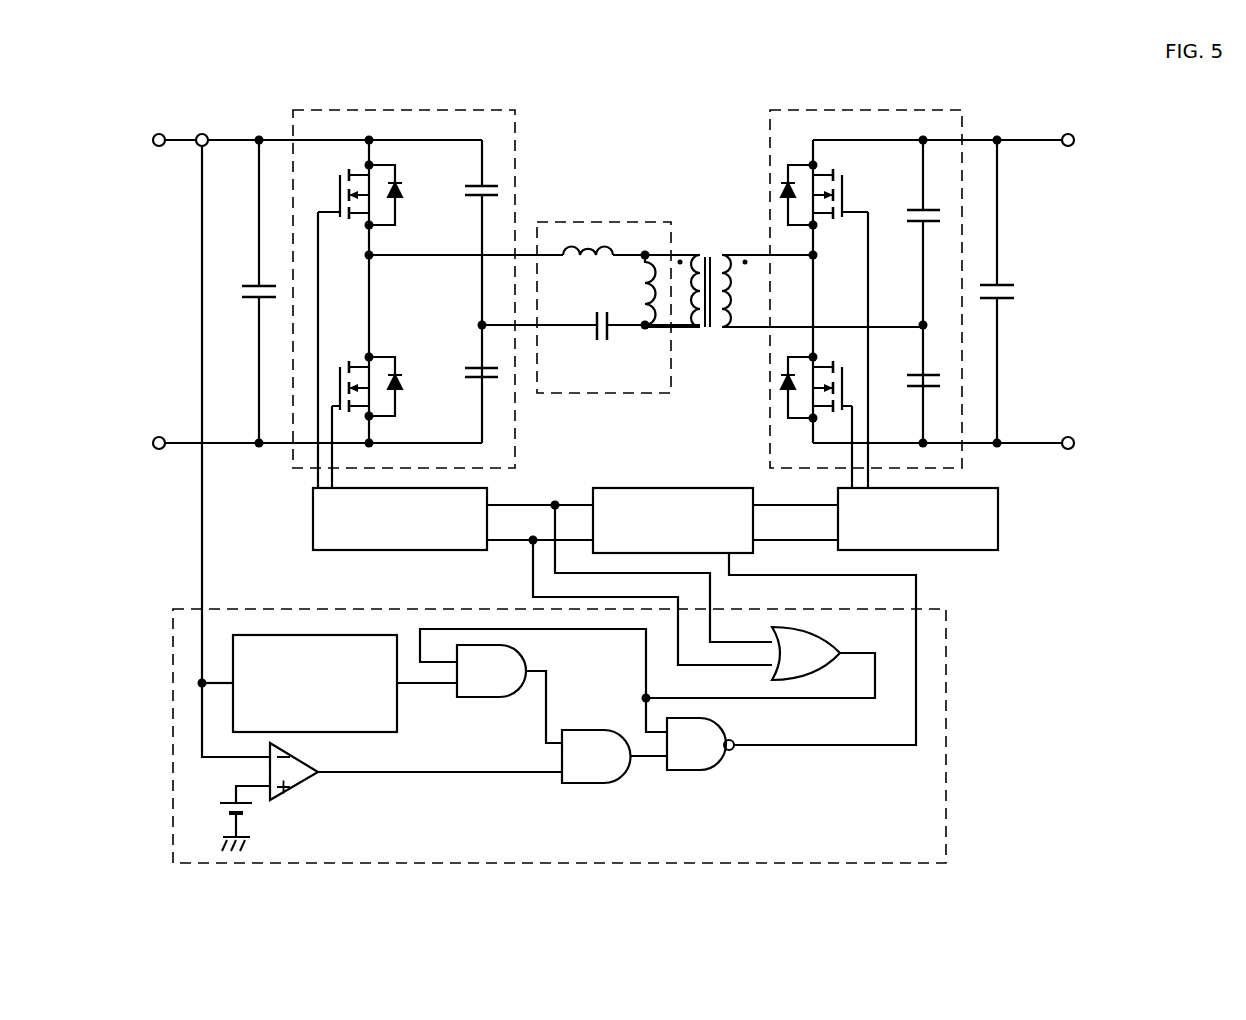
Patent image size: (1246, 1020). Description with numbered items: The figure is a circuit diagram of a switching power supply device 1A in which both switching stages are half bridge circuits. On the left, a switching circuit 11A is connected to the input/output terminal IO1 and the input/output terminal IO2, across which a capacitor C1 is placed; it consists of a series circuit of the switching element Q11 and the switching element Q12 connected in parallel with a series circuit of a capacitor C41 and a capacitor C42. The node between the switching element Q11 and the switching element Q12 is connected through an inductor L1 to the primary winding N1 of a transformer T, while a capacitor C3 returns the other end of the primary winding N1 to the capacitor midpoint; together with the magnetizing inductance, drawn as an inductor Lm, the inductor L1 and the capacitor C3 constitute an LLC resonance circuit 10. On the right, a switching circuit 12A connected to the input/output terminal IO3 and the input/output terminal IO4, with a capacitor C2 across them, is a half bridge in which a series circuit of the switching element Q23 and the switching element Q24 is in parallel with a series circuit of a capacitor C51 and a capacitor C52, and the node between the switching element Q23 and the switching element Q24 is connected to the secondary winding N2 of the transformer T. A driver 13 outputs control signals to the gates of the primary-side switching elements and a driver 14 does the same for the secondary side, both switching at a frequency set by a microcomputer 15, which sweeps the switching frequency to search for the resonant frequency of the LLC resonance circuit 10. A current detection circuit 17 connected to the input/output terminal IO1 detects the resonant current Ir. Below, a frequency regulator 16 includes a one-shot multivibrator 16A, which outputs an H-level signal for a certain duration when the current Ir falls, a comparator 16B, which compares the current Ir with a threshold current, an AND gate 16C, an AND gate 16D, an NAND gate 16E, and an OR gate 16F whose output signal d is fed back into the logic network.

The switching power supply device 1A is at (671, 114).
The LLC resonance circuit 10 is at (658, 221).
The switching circuit 11A is at (293, 108).
The switching circuit 12A is at (778, 108).
The driver 13 is at (312, 551).
The driver 14 is at (990, 552).
The microcomputer 15 is at (676, 487).
The frequency regulator 16 is at (178, 608).
The one-shot multivibrator 16A is at (286, 635).
The comparator 16B is at (294, 787).
The AND gate 16C is at (457, 700).
The AND gate 16D is at (575, 786).
The NAND gate 16E is at (695, 773).
The OR gate 16F is at (826, 627).
The current detection circuit 17 is at (213, 158).
The transformer T is at (696, 271).
The primary winding N1 is at (673, 305).
The secondary winding N2 is at (735, 305).
The inductor L1 is at (604, 267).
The inductor Lm is at (633, 290).
The capacitor C3 is at (597, 340).
The capacitor C1 is at (250, 281).
The capacitor C2 is at (1007, 281).
The capacitor C41 is at (466, 206).
The capacitor C42 is at (466, 356).
The capacitor C51 is at (909, 230).
The capacitor C52 is at (909, 363).
The switching element Q11 is at (378, 188).
The switching element Q12 is at (373, 372).
The switching element Q23 is at (829, 186).
The switching element Q24 is at (820, 376).
The input/output terminal IO1 is at (159, 165).
The input/output terminal IO2 is at (159, 423).
The input/output terminal IO3 is at (1068, 165).
The input/output terminal IO4 is at (1068, 423).
The current Ir is at (230, 123).
The output signal d is at (854, 640).